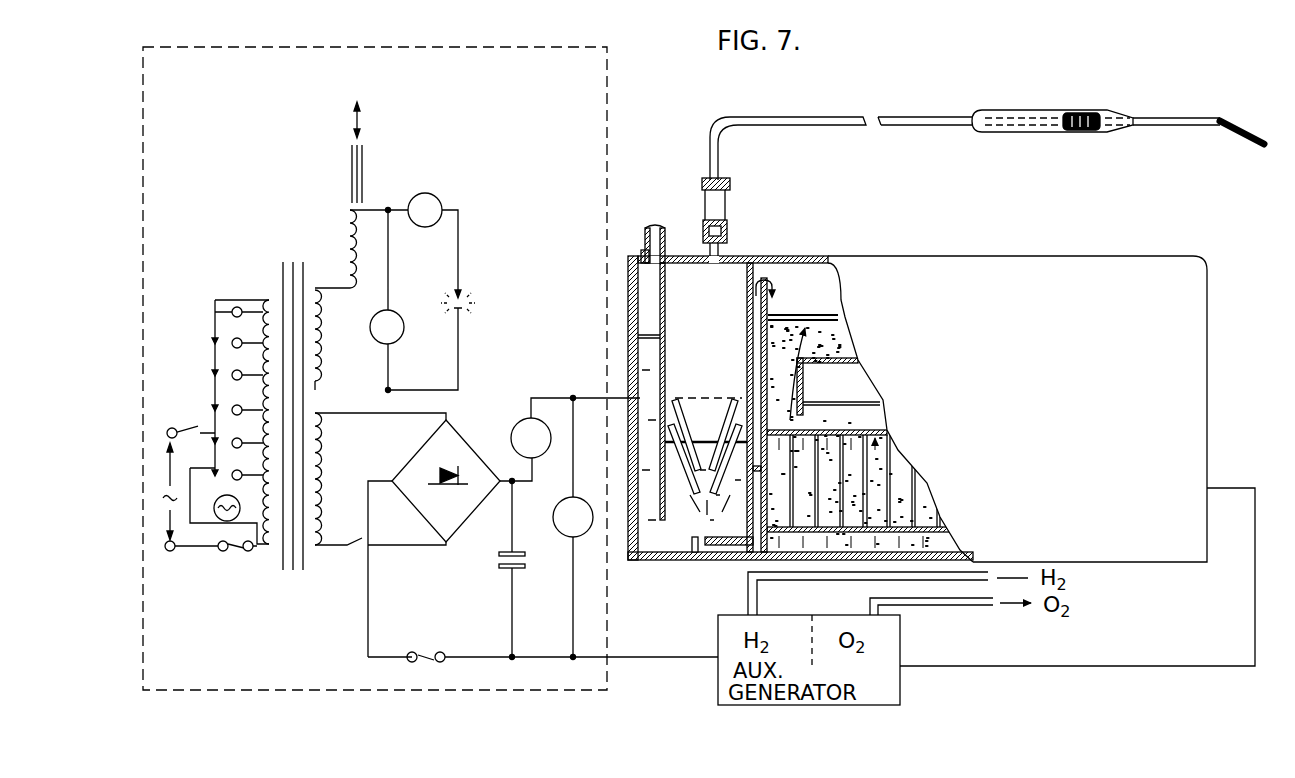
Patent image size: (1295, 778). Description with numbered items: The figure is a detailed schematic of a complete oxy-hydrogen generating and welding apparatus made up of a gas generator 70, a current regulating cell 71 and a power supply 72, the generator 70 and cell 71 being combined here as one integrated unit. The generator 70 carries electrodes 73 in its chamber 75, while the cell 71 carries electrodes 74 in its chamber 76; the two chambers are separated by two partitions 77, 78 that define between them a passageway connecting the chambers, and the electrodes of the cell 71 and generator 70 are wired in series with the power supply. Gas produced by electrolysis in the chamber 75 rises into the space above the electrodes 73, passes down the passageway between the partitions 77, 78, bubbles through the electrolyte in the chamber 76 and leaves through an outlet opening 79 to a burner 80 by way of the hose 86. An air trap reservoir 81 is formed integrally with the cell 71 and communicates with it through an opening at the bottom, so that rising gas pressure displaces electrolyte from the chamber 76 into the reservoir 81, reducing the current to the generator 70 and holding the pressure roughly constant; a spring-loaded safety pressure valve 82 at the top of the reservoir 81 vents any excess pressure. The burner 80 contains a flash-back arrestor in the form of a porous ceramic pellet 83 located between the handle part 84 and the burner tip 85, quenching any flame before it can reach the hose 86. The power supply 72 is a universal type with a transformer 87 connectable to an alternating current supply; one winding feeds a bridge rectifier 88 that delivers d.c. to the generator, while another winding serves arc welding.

The gas generator 70 is at (1043, 398).
The current regulating cell 71 is at (678, 564).
The power supply 72 is at (612, 88).
The electrodes 73 is at (880, 497).
The electrodes 74 is at (660, 427).
The chamber 75 is at (819, 298).
The chamber 76 is at (718, 331).
The partition 77 is at (761, 357).
The partition 78 is at (750, 387).
The outlet opening 79 is at (723, 250).
The burner 80 is at (1037, 138).
The air trap reservoir 81 is at (647, 283).
The spring-loaded safety pressure valve 82 is at (651, 228).
The porous ceramic pellet 83 is at (1097, 131).
The handle part 84 is at (1010, 113).
The burner tip 85 is at (1233, 128).
The hose 86 is at (808, 118).
The transformer 87 is at (289, 578).
The rectifier 88 is at (458, 517).